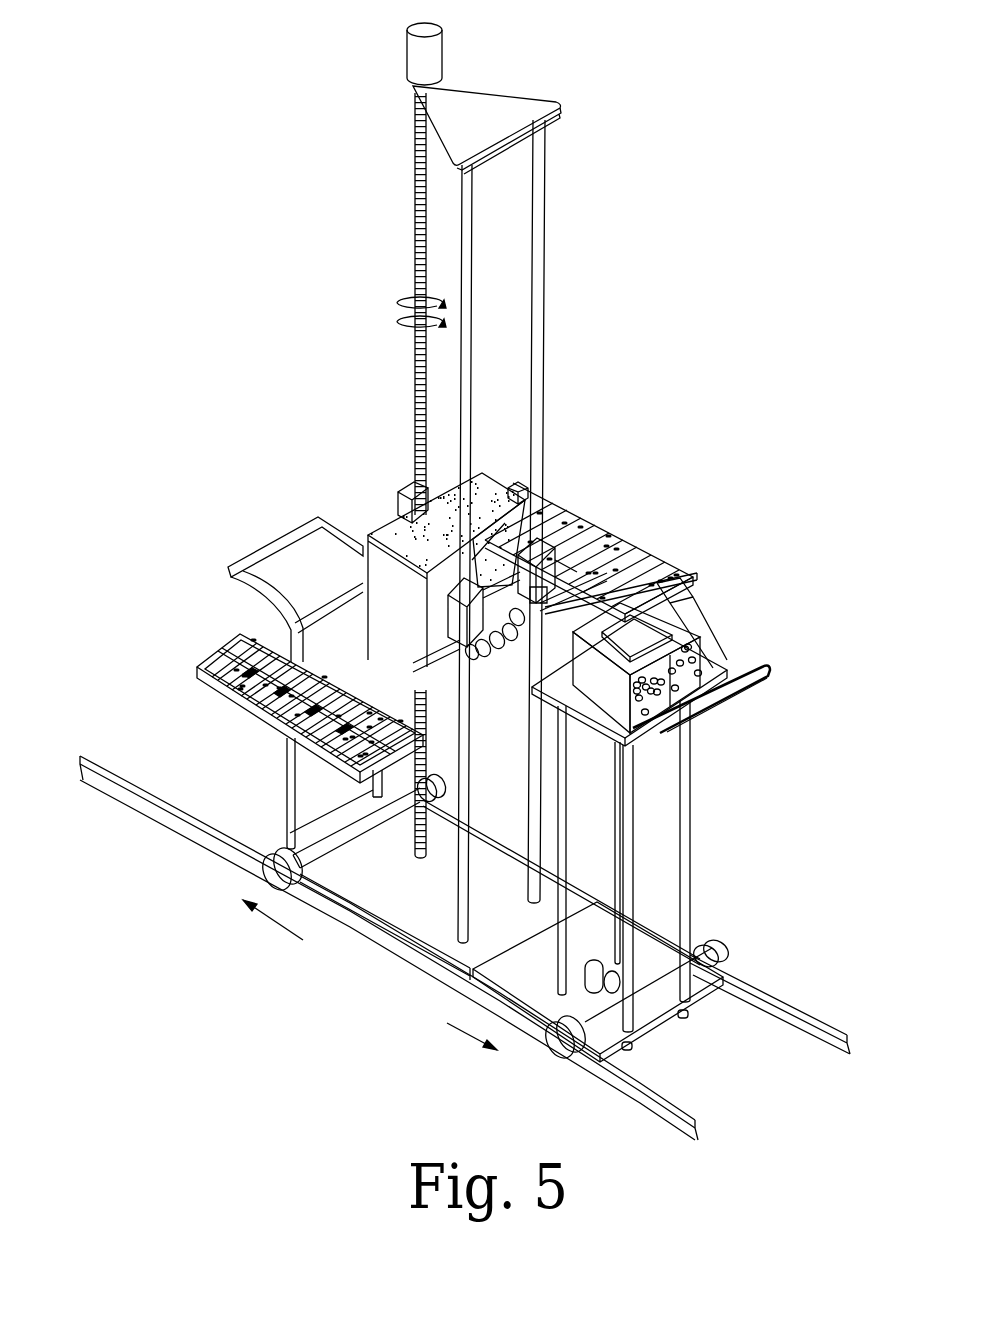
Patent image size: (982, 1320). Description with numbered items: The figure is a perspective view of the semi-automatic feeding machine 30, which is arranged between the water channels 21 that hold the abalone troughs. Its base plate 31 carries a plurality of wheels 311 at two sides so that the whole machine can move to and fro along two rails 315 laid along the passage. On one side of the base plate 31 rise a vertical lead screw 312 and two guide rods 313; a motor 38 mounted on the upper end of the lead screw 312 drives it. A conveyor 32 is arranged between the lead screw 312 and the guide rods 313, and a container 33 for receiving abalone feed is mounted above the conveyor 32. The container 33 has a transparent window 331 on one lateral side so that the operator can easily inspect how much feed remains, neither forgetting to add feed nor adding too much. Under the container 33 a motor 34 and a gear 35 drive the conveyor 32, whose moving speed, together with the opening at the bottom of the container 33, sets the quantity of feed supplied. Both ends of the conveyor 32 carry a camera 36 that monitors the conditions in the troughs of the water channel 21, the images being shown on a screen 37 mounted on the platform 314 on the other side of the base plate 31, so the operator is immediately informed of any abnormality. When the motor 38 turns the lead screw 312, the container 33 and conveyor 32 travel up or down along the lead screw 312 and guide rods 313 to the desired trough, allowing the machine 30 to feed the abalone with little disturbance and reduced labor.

The water channel 21 is at (245, 660).
The semi-automatic feeding machine 30 is at (520, 68).
The base plate 31 is at (400, 898).
The wheels 311 is at (540, 1027).
The lead screw 312 is at (375, 790).
The guide rods 313 is at (470, 295).
The platform 314 is at (580, 702).
The rails 315 is at (745, 988).
The conveyor 32 is at (330, 638).
The container 33 is at (415, 522).
The transparent window 331 is at (528, 486).
The motor 34 is at (492, 646).
The gear 35 is at (473, 660).
The camera 36 is at (288, 738).
The screen 37 is at (707, 660).
The motor 38 is at (408, 68).